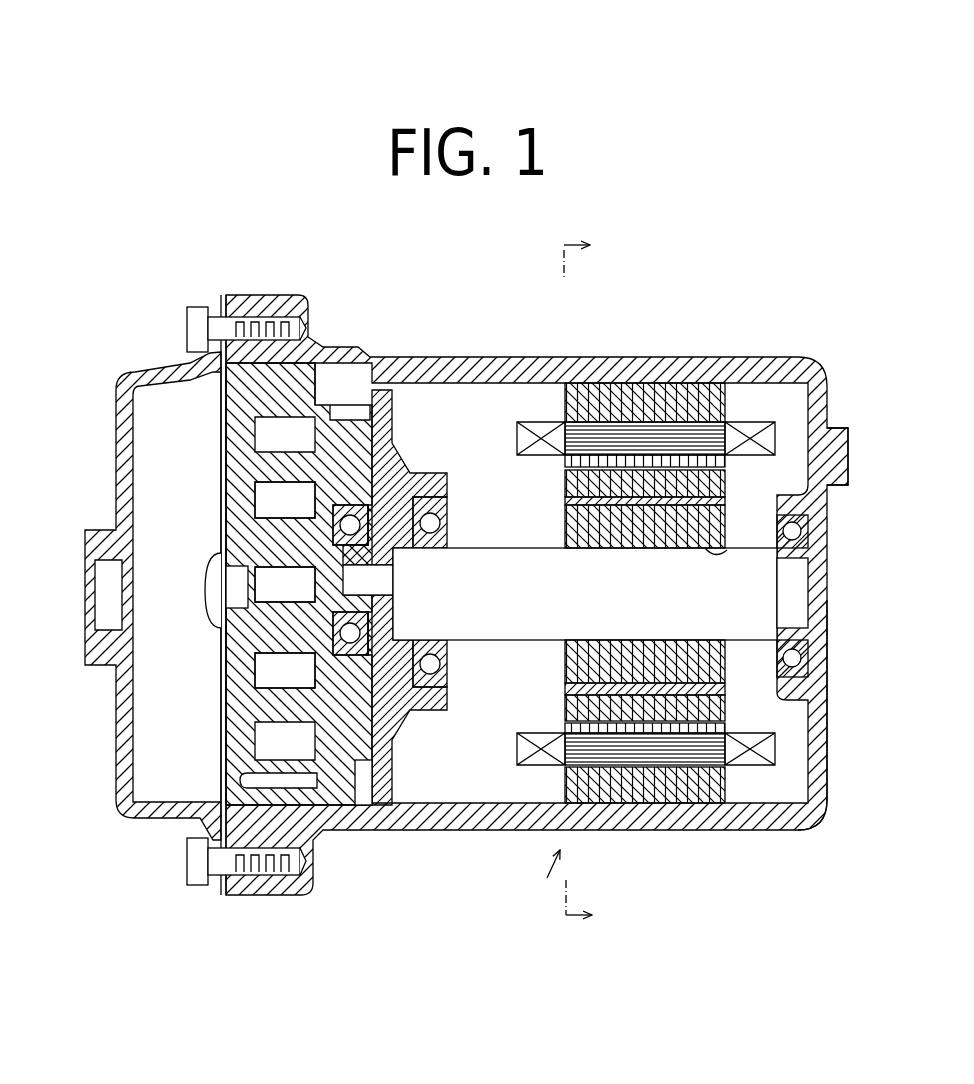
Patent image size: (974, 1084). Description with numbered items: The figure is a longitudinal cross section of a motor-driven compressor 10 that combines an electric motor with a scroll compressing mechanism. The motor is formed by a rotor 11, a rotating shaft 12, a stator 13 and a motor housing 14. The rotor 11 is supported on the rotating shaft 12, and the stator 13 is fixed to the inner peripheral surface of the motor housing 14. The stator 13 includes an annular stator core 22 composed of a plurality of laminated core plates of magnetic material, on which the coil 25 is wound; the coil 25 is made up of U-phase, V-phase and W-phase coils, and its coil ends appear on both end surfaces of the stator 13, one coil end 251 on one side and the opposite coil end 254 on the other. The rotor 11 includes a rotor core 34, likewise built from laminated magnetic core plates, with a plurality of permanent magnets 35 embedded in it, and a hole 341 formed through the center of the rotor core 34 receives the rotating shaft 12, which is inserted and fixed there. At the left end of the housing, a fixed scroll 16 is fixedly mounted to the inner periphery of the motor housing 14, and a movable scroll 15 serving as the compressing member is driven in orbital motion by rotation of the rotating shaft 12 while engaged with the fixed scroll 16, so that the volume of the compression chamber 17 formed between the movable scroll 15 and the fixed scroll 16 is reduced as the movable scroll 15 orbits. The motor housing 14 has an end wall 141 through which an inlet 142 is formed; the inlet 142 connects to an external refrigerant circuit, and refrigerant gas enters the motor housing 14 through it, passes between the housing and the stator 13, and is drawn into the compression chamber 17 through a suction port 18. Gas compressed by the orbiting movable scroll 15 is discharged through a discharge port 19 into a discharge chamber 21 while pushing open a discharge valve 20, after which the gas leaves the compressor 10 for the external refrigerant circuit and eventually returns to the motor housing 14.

The motor-driven compressor 10 is at (178, 300).
The rotor 11 is at (600, 595).
The rotating shaft 12 is at (486, 641).
The stator 13 is at (632, 567).
The motor housing 14 is at (560, 595).
The end wall 141 is at (828, 698).
The inlet 142 is at (858, 461).
The movable scroll 15 is at (364, 746).
The fixed scroll 16 is at (222, 432).
The compression chamber 17 is at (299, 513).
The suction port 18 is at (364, 781).
The discharge port 19 is at (245, 600).
The discharge valve 20 is at (234, 578).
The discharge chamber 21 is at (191, 751).
The stator core 22 is at (666, 415).
The coil 25 is at (608, 432).
The coil end 251 is at (517, 437).
The coil end 254 is at (775, 440).
The rotor core 34 is at (578, 482).
The hole 341 is at (727, 556).
The permanent magnets 35 is at (570, 505).